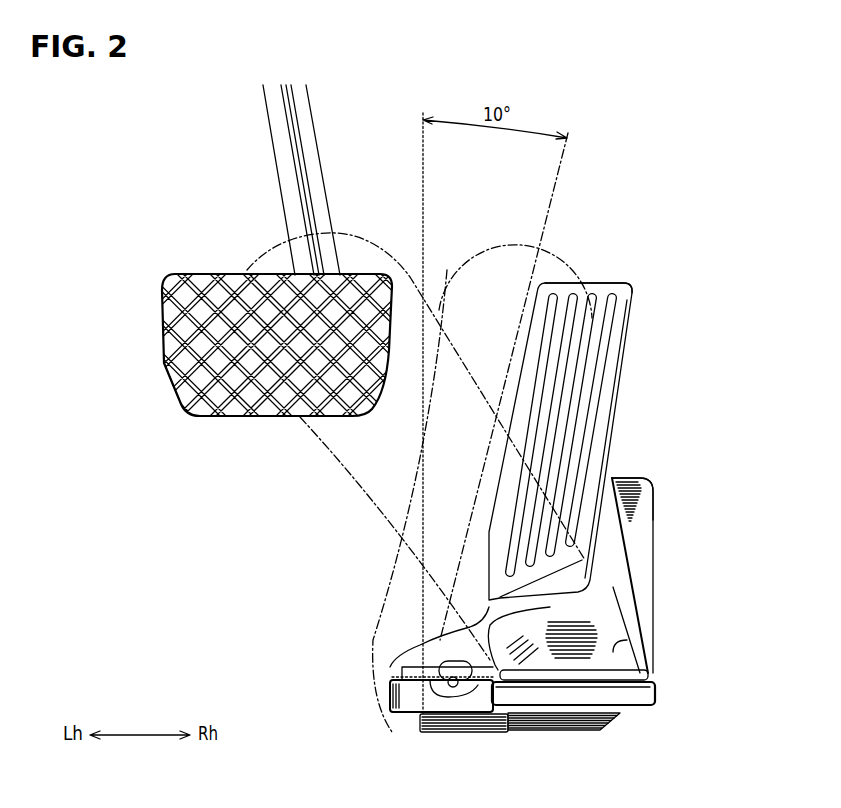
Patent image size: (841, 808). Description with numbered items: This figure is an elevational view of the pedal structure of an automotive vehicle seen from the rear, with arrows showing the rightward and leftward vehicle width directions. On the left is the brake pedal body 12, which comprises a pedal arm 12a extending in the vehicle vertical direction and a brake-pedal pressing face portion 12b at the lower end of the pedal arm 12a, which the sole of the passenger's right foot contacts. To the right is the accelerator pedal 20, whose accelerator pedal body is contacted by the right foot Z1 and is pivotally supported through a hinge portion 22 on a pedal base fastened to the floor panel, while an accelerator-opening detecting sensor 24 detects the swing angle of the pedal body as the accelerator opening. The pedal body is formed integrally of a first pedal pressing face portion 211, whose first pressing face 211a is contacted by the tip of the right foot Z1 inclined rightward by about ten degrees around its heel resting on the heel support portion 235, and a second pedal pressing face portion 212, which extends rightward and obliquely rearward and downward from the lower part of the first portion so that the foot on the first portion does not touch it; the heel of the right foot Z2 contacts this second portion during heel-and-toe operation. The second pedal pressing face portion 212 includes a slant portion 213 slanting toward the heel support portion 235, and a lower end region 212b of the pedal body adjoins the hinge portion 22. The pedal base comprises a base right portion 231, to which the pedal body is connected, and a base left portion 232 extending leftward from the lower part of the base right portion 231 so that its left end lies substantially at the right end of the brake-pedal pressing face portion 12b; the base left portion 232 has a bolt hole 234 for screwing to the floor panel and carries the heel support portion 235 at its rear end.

The brake pedal body 12 is at (172, 270).
The pedal arm 12a is at (279, 168).
The brake-pedal pressing face portion 12b is at (190, 407).
The accelerator pedal 20 is at (663, 478).
The first pedal pressing face portion 211 is at (633, 340).
The first pressing face 211a is at (620, 288).
The second pedal pressing face portion 212 is at (636, 601).
The pedal arm lower end 212b is at (630, 652).
The slant portion 213 is at (548, 718).
The hinge portion 22 is at (620, 660).
The base right portion 231 is at (657, 690).
The base left portion 232 is at (427, 617).
The bolt hole 234 is at (440, 650).
The heel support portion 235 is at (415, 712).
The accelerator-opening detecting sensor 24 is at (645, 526).
The right foot Z1 is at (590, 231).
The right foot Z2 is at (325, 437).